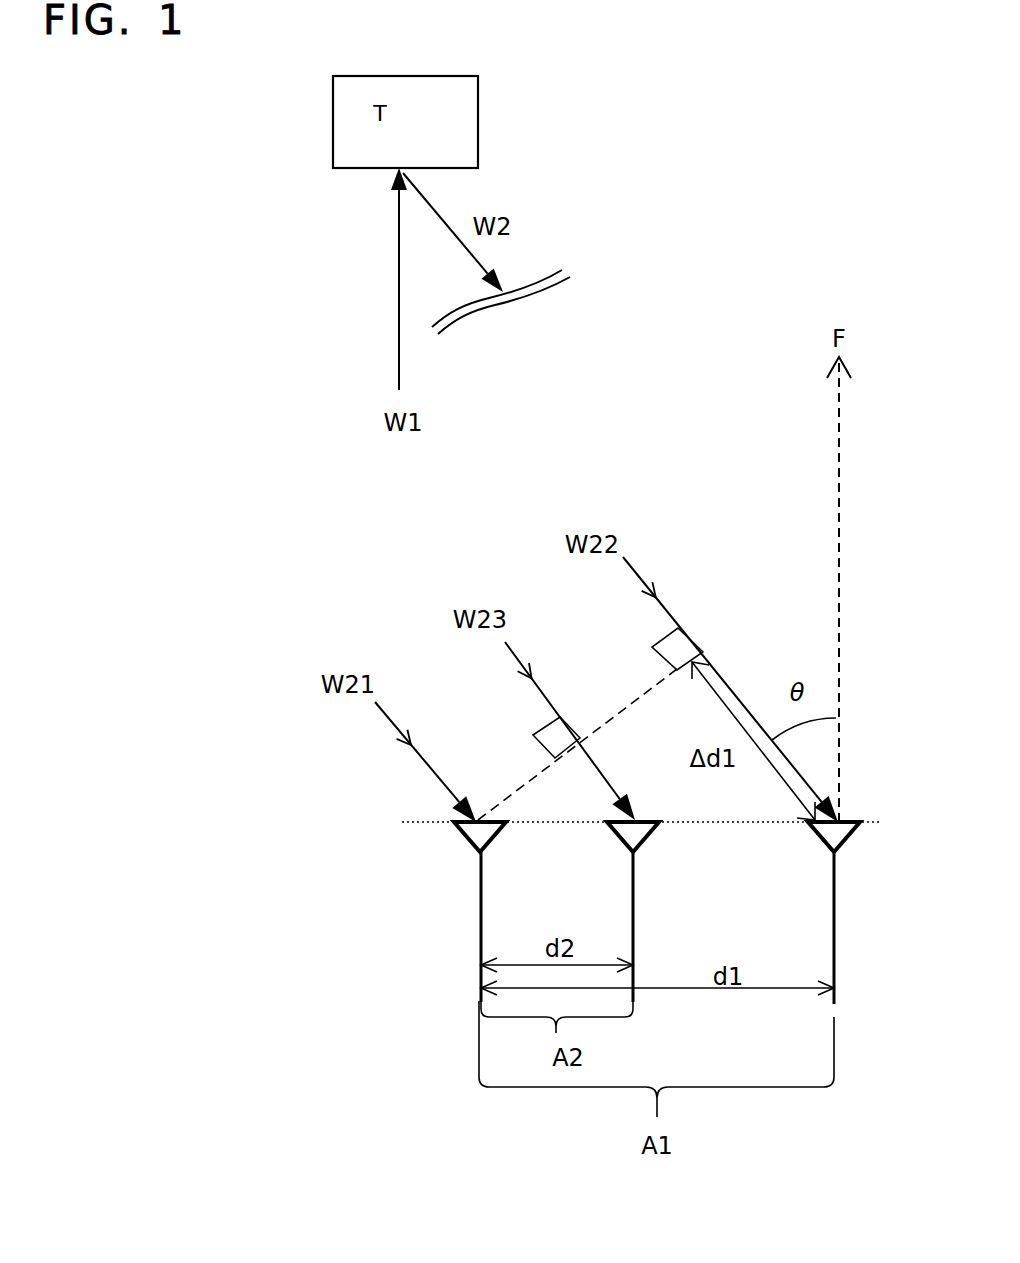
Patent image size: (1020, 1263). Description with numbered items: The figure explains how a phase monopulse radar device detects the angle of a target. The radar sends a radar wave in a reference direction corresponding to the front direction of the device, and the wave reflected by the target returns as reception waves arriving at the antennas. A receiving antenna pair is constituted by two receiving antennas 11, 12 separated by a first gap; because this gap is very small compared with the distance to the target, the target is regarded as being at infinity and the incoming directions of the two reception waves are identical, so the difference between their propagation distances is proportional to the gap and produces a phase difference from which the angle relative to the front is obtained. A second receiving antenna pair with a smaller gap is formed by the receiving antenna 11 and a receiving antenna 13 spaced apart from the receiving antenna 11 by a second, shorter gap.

The receiving antenna 11 is at (479, 888).
The receiving antenna 12 is at (836, 890).
The receiving antenna 13 is at (636, 890).